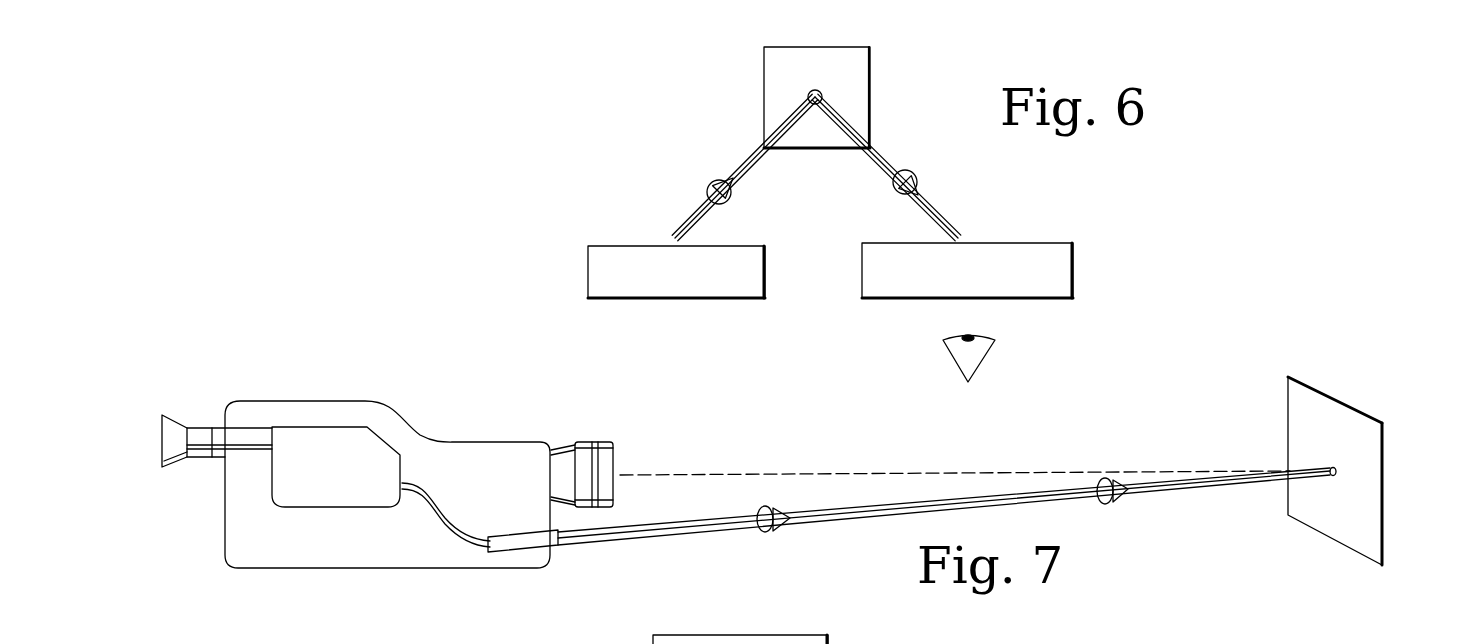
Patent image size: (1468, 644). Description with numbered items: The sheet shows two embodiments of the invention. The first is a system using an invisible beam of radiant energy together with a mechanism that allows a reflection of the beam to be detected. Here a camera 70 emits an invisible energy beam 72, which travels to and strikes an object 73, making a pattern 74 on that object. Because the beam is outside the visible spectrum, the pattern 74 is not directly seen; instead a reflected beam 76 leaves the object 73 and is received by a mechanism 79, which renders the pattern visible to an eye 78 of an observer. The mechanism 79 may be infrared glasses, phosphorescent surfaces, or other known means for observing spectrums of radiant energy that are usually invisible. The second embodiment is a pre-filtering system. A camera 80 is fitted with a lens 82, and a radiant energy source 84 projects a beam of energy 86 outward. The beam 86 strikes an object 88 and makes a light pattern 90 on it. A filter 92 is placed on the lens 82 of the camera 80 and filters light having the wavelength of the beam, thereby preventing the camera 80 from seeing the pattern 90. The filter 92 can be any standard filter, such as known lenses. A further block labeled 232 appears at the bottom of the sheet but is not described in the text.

In FIG. 6, the camera 70 is at (620, 247).
In FIG. 6, the invisible energy beam 72 is at (697, 208).
In FIG. 6, the object 73 is at (773, 83).
In FIG. 6, the pattern 74 is at (823, 92).
In FIG. 6, the reflected beam 76 is at (948, 215).
In FIG. 6, the eye 78 is at (980, 350).
In FIG. 6, the mechanism 79 is at (1022, 243).
In FIG. 7, the camera 80 is at (383, 422).
In FIG. 7, the lens 82 is at (570, 443).
In FIG. 7, the radiant energy source 84 is at (523, 552).
In FIG. 7, the beam of energy 86 is at (660, 530).
In FIG. 7, the object 88 is at (1337, 425).
In FIG. 7, the light pattern 90 is at (1340, 468).
In FIG. 7, the filter 92 is at (613, 453).
In FIG. 7, the block 232 is at (698, 637).